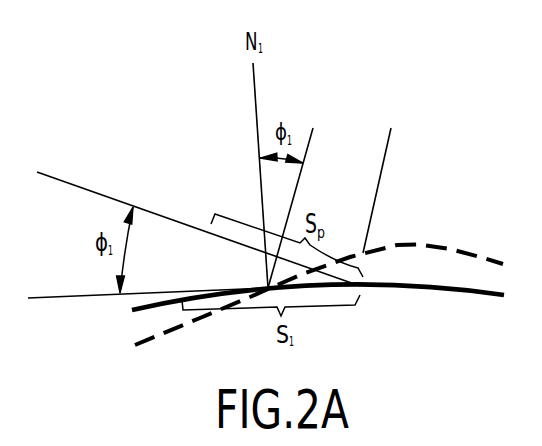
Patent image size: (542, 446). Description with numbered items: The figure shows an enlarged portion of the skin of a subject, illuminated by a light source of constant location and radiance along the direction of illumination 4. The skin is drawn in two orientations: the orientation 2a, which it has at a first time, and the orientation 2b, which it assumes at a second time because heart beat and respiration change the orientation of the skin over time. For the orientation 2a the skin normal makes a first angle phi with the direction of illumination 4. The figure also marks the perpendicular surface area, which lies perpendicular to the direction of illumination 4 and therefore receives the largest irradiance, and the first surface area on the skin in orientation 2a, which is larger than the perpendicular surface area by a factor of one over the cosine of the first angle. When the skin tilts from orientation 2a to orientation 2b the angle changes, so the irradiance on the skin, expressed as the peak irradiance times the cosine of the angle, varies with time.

The direction of the illumination 4 is at (310, 142).
The skin orientation at t=1 2a is at (428, 292).
The skin orientation at t=2 2b is at (437, 243).